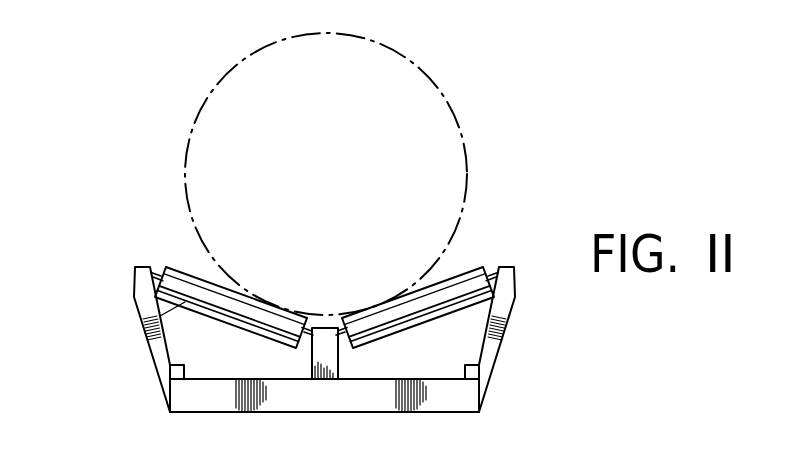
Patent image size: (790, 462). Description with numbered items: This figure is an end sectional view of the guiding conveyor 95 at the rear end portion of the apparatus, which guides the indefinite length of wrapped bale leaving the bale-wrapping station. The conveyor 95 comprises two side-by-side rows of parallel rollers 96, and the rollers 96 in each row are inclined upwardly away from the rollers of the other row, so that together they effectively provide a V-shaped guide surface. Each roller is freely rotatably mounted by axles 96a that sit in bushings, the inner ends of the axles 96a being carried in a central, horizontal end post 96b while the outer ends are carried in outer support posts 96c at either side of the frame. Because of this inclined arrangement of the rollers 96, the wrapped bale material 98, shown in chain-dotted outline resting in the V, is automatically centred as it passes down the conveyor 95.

The guiding conveyor 95 is at (124, 281).
The rollers 96 is at (154, 332).
The axles 96a is at (490, 282).
The central horizontal end post 96b is at (327, 358).
The outer support posts 96c is at (140, 314).
The wrapped bale material 98 is at (440, 93).